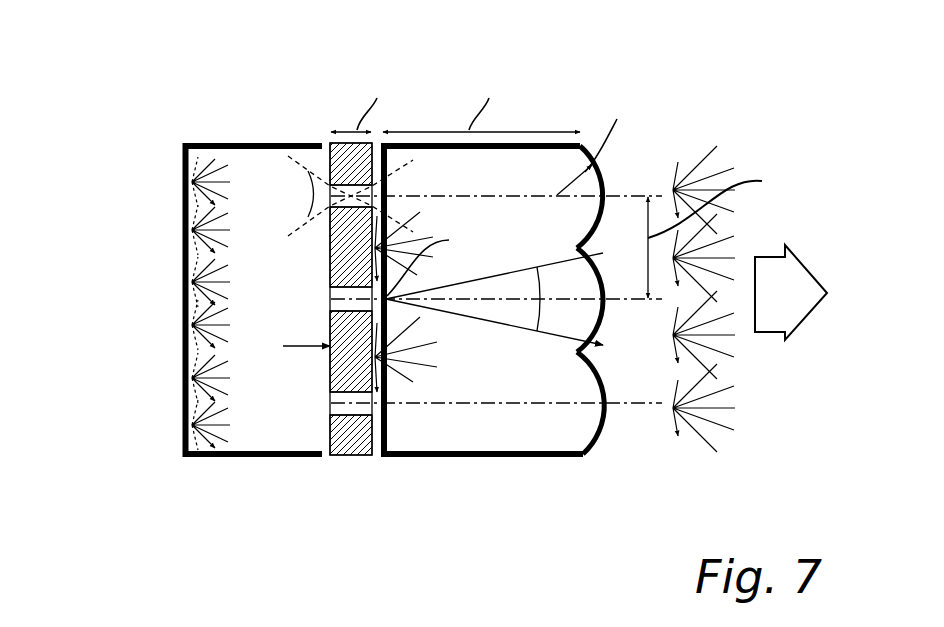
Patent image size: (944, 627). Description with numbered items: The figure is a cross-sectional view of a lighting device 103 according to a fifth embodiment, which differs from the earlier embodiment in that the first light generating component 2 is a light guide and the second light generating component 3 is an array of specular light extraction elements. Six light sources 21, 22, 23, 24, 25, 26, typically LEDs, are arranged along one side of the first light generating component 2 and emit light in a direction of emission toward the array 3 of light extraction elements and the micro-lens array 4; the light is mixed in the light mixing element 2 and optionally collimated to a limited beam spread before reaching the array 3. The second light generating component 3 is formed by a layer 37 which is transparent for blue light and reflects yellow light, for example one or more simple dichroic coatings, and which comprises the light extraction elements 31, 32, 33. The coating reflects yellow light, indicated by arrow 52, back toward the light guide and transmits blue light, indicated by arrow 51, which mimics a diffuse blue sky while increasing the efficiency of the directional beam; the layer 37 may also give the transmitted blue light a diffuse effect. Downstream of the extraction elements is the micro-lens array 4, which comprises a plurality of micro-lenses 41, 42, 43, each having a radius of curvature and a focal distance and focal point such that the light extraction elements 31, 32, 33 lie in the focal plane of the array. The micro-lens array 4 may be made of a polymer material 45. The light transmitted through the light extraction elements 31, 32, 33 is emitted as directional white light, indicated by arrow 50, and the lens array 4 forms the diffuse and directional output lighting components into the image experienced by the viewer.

The lighting device 103 is at (121, 128).
The first light generating component 2 is at (230, 143).
The light source 21 is at (183, 184).
The light source 22 is at (183, 232).
The light source 23 is at (183, 284).
The light source 24 is at (183, 327).
The light source 25 is at (183, 380).
The light source 26 is at (183, 427).
The second light generating component 3 is at (406, 350).
The light extraction element 31 is at (384, 407).
The light extraction element 32 is at (392, 308).
The light extraction element 33 is at (387, 192).
The layer 37 is at (358, 443).
The micro-lens array 4 is at (483, 457).
The micro-lens 41 is at (606, 180).
The micro-lens 42 is at (603, 313).
The micro-lens 43 is at (600, 428).
The polymer material 45 is at (530, 432).
The directional white light 50 is at (770, 332).
The transmitted blue light 51 is at (715, 420).
The reflected yellow light 52 is at (307, 373).